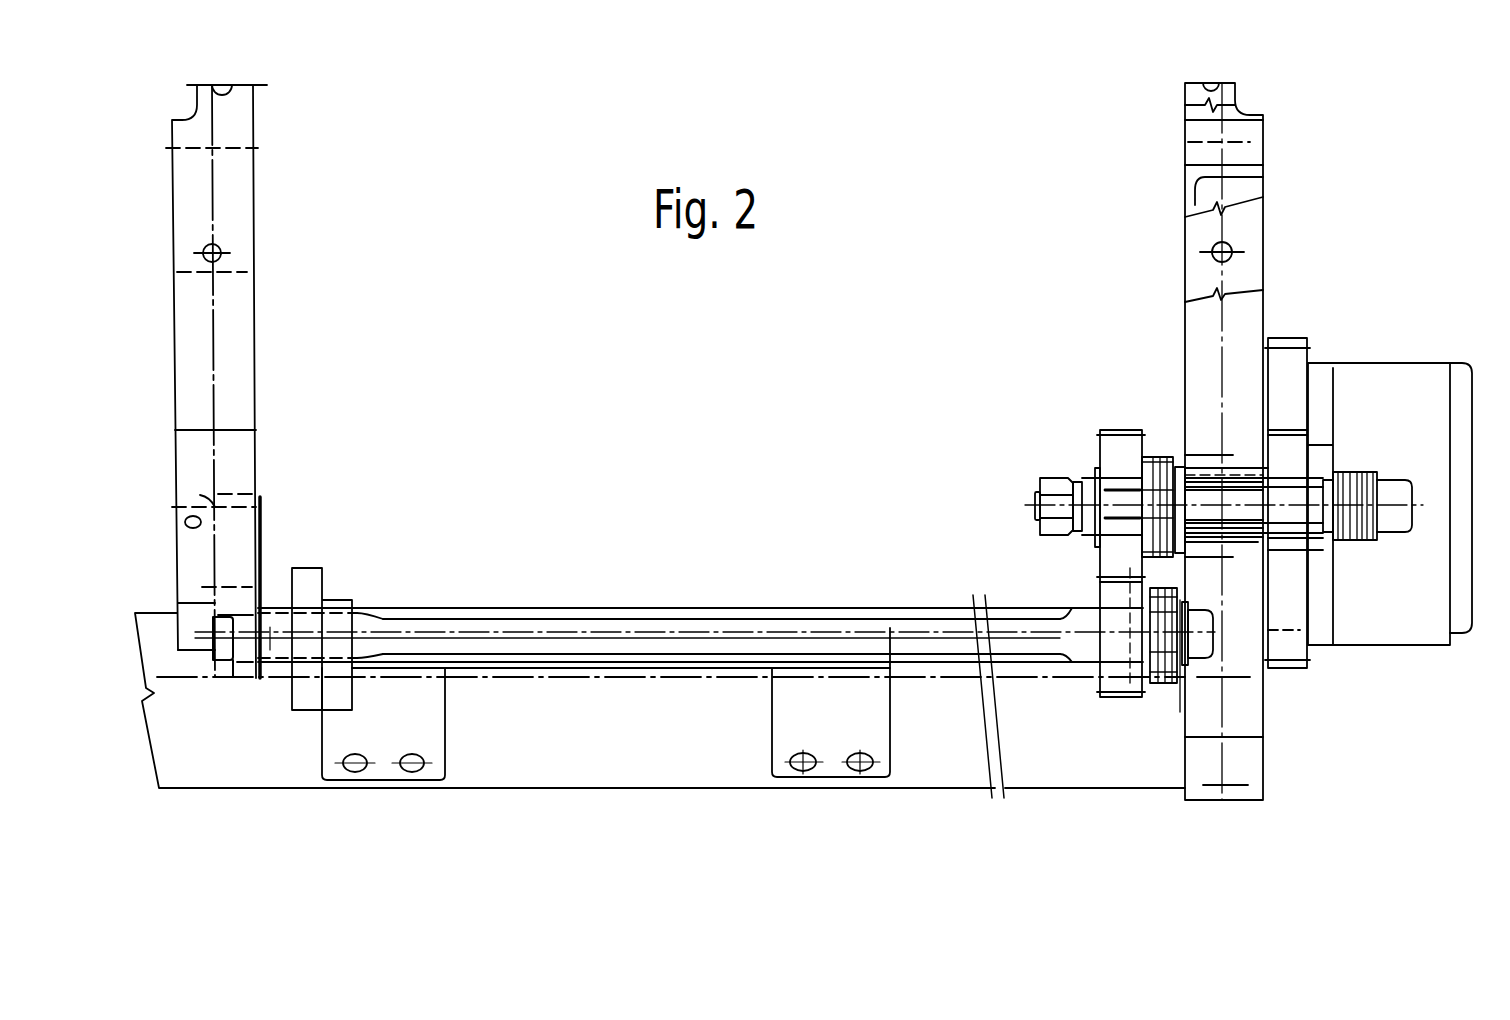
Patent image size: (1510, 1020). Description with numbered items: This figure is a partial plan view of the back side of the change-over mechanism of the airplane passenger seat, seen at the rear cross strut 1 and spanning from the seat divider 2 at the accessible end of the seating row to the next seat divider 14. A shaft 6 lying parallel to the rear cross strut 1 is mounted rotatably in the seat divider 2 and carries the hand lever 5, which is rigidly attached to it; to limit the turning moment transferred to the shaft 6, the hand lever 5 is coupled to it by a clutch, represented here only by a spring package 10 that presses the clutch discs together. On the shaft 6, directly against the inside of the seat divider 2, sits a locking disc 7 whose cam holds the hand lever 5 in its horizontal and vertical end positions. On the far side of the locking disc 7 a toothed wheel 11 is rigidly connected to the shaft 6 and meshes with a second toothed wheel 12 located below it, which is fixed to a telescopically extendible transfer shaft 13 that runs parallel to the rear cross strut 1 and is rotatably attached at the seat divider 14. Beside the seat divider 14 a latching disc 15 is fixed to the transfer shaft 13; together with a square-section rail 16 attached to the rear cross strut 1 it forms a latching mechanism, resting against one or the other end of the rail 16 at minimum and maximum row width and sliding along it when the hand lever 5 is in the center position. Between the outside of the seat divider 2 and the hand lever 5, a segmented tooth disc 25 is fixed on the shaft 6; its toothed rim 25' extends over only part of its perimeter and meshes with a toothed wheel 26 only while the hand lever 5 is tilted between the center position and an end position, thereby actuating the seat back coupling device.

The rear cross strut 1 is at (632, 763).
The seat divider 2 is at (1200, 330).
The hand lever 5 is at (1385, 388).
The shaft 6 is at (1100, 485).
The locking disc 7 is at (1163, 462).
The spring package 10 is at (1365, 540).
The toothed wheel 11 is at (1115, 482).
The second toothed wheel 12 is at (1117, 683).
The transfer shaft 13 is at (925, 625).
The seat divider 14 is at (237, 327).
The latching disc 15 is at (305, 577).
The rail 16 is at (492, 668).
The segmented tooth disc 25 is at (1333, 463).
The toothed rim 25' is at (1322, 704).
The toothed wheel 26 is at (1293, 550).